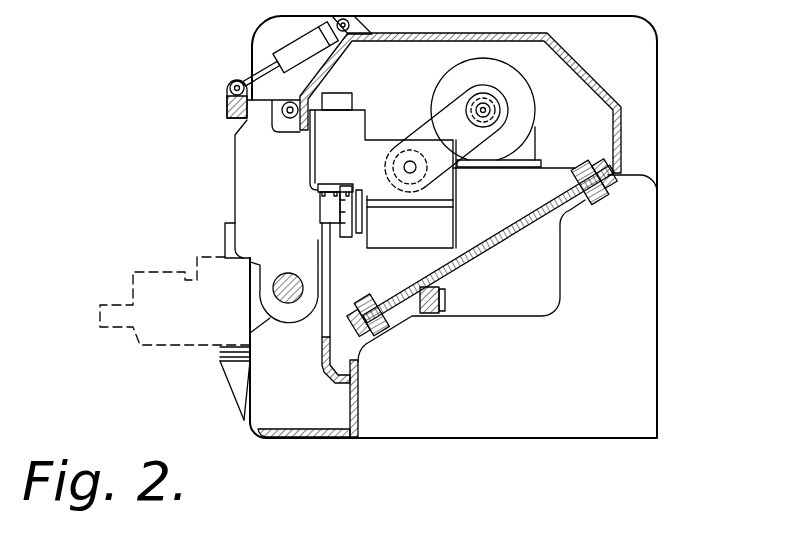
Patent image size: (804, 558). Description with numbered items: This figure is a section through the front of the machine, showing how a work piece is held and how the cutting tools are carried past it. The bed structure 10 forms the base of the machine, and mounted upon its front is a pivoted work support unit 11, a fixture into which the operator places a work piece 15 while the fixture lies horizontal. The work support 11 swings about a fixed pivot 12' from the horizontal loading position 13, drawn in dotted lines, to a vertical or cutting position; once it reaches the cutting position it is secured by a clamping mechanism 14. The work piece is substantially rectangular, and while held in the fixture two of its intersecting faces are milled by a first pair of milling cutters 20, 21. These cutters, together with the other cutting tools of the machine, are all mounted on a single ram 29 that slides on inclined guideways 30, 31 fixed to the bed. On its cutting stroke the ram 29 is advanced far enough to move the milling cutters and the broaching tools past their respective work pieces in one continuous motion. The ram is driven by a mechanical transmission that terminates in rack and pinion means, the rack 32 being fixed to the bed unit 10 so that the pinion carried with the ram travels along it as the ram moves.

The bed structure 10 is at (628, 337).
The work support unit 11 is at (243, 176).
The fixed pivot 12' is at (284, 309).
The horizontal loading position 13 is at (170, 345).
The clamping mechanism 14 is at (228, 101).
The work piece 15 is at (321, 207).
The milling cutter 20 is at (343, 238).
The milling cutter 21 is at (342, 190).
The ram 29 is at (543, 182).
The inclined guideway 30 is at (386, 334).
The inclined guideway 31 is at (590, 194).
The rack 32 is at (440, 315).